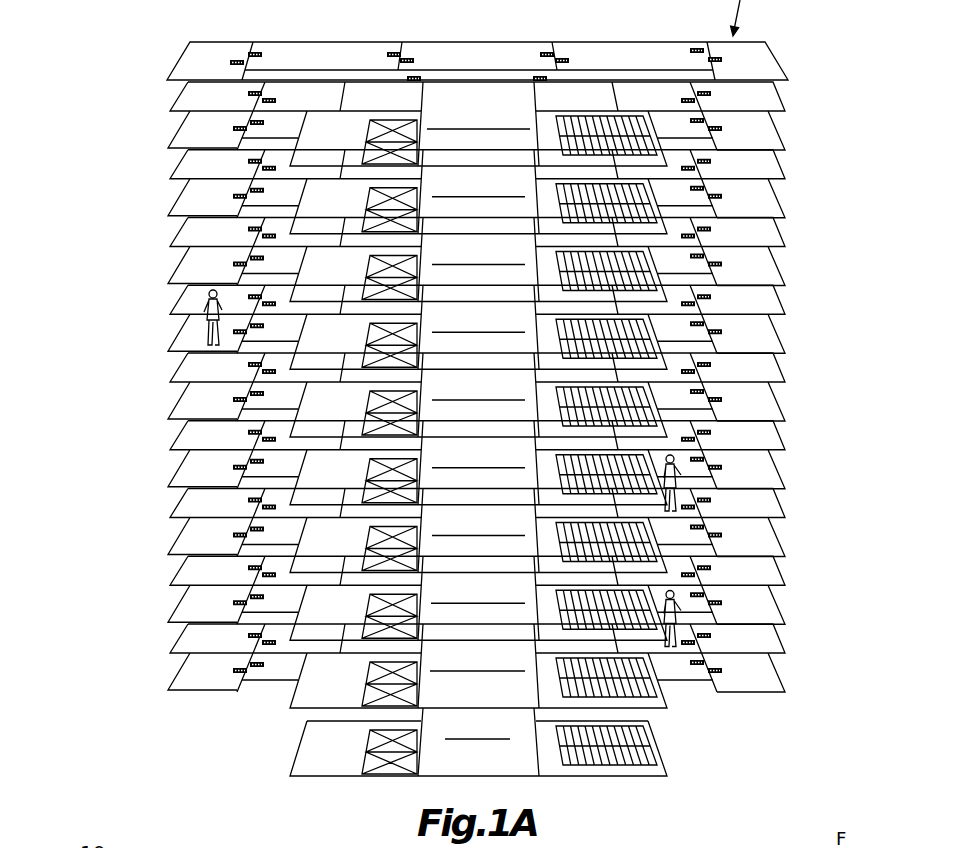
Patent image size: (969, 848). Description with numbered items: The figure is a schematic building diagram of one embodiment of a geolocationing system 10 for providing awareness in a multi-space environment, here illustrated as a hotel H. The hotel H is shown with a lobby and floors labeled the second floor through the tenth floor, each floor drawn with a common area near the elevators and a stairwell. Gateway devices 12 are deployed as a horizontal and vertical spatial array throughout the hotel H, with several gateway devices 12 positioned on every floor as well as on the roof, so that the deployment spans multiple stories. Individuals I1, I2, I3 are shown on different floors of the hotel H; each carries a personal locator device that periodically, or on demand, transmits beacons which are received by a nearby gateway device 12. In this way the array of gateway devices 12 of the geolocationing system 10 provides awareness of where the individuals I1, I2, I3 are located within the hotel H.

The geolocationing system 10 is at (103, 111).
The gateway devices 12 is at (262, 100).
The hotel H is at (786, 28).
The individual I1 is at (203, 320).
The individual I2 is at (682, 486).
The individual I3 is at (682, 622).